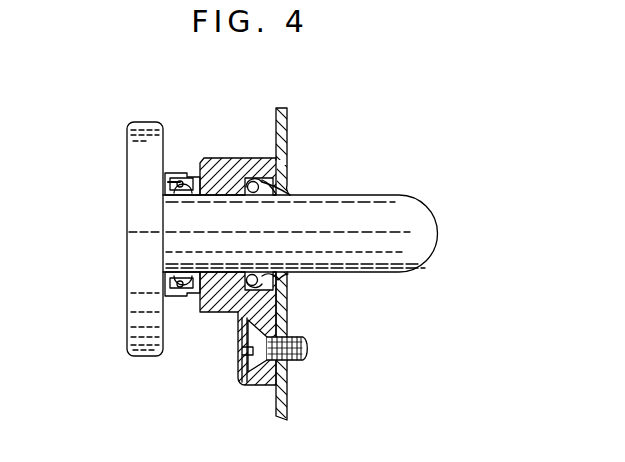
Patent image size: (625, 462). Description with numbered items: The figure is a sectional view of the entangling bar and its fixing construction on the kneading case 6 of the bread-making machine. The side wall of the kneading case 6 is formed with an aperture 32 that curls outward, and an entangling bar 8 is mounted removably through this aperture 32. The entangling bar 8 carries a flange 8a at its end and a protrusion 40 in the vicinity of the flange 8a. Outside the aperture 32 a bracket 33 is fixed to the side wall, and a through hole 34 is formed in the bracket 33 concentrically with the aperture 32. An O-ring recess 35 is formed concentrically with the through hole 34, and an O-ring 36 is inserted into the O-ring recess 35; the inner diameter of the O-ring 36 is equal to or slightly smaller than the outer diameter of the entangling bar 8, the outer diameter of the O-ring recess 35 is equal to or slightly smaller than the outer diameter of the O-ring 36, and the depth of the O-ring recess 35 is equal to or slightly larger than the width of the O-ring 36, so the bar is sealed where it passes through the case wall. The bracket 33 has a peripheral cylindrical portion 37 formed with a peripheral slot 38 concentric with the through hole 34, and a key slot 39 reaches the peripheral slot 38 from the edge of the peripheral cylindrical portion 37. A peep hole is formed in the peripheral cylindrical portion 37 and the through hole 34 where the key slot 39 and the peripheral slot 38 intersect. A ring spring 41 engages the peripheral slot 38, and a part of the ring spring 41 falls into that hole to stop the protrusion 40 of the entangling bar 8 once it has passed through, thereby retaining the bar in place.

The kneading case 6 is at (288, 113).
The entangling bar 8 is at (394, 195).
The flange 8a is at (145, 358).
The aperture 32 is at (289, 193).
The bracket 33 is at (254, 387).
The through hole 34 is at (233, 199).
The O-ring recess 35 is at (239, 315).
The O-ring 36 is at (280, 280).
The peripheral cylindrical portion 37 is at (192, 176).
The peripheral slot 38 is at (178, 178).
The key slot 39 is at (167, 188).
The protrusion 40 is at (188, 178).
The ring spring 41 is at (184, 296).